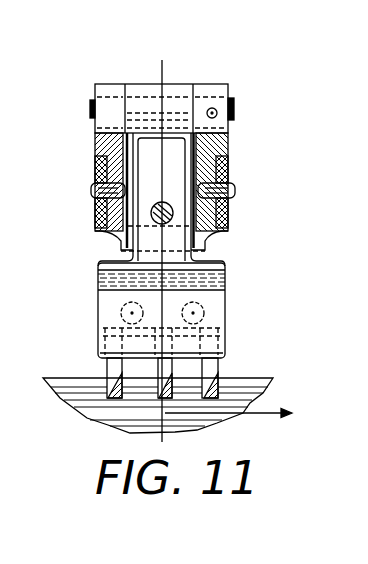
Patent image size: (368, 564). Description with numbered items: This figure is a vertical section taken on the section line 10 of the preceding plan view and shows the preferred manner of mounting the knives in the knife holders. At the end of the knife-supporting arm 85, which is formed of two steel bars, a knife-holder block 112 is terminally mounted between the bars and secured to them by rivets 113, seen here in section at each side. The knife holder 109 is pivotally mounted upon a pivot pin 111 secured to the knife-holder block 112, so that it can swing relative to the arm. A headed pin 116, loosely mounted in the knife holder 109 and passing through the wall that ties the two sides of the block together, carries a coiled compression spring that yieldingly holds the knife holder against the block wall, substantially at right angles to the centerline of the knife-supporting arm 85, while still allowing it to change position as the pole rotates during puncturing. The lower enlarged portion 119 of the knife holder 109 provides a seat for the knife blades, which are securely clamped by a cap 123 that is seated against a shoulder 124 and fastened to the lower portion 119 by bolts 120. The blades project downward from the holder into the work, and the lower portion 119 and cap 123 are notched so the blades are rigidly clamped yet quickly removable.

The section line 10- 10 is at (238, 233).
The knife-supporting arm 85 is at (95, 167).
The knife holder 109 is at (175, 243).
The pivot pin 111 is at (232, 104).
The knife-holder block 112 is at (232, 142).
The rivets 113 is at (98, 192).
The headed pin 116 is at (156, 204).
The lower enlarged portion 119 is at (225, 268).
The bolts 120 is at (190, 300).
The cap 123 is at (205, 300).
The shoulder 124 is at (118, 272).